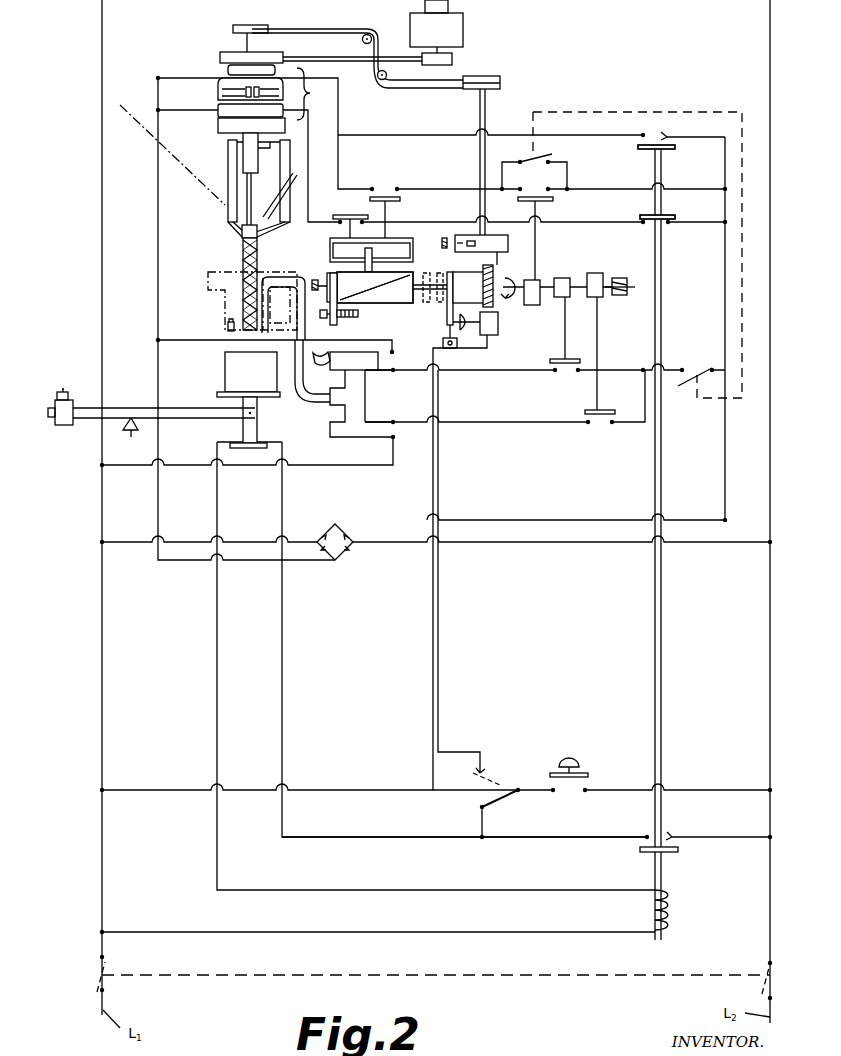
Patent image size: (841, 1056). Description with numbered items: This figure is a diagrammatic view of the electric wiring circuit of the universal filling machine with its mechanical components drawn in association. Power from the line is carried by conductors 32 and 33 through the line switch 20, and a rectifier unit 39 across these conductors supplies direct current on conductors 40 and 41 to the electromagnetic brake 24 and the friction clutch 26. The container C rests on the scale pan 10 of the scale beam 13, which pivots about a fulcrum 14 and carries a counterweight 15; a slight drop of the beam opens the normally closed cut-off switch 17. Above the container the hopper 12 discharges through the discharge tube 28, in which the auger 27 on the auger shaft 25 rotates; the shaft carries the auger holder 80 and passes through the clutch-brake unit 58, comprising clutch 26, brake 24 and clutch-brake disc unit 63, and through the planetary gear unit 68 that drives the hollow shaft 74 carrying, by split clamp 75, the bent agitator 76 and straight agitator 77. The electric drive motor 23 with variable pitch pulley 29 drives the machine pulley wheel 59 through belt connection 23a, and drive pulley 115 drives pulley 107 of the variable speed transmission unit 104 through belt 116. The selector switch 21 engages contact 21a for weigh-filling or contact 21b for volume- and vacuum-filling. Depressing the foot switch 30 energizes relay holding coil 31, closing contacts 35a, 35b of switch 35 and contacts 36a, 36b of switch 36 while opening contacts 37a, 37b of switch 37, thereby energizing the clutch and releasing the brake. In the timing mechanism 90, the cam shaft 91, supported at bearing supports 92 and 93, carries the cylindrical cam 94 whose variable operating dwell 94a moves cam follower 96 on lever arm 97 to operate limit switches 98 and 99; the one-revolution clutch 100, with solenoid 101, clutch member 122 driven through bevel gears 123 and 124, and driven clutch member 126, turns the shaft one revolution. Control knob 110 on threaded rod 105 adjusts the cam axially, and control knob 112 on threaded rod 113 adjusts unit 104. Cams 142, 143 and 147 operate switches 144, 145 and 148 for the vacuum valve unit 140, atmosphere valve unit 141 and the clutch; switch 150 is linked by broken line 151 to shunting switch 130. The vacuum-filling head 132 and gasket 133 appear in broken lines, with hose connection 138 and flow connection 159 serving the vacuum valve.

The scale pan 10 is at (217, 394).
The hopper 12 is at (172, 172).
The scale beam 13 is at (208, 418).
The fulcrum 14 is at (129, 438).
The counterweight 15 is at (55, 404).
The cut-off switch 17 is at (268, 443).
The line switch 20 is at (104, 985).
The selector switch 21 is at (506, 800).
The contact 21a is at (480, 808).
The contact 21b is at (484, 771).
The electric drive motor 23 is at (463, 31).
The belt connection 23a is at (388, 57).
The electromagnetic brake 24 is at (218, 112).
The auger shaft 25 is at (246, 45).
The friction clutch 26 is at (232, 78).
The auger 27 is at (245, 264).
The discharge tube 28 is at (243, 284).
The variable pitch pulley 29 is at (452, 60).
The foot switch 30 is at (579, 760).
The relay holding coil 31 is at (664, 919).
The conductor 32 is at (770, 690).
The conductor 33 is at (105, 684).
The normally open switch 35 is at (623, 889).
The contact 35a is at (675, 838).
The contact 35b is at (678, 850).
The normally open switch 36 is at (622, 175).
The contact 36a is at (669, 137).
The contact 36b is at (676, 148).
The normally closed switch 37 is at (667, 205).
The contact 37a is at (670, 222).
The contact 37b is at (645, 215).
The rectifier unit 39 is at (340, 528).
The conductor 40 is at (725, 458).
The conductor 41 is at (158, 258).
The clutch-brake unit 58 is at (311, 103).
The machine pulley wheel 59 is at (274, 56).
The clutch-brake disc unit 63 is at (218, 93).
The planetary gear unit 68 is at (218, 128).
The hollow shaft 74 is at (255, 168).
The split clamp 75 is at (232, 148).
The bent agitator 76 is at (282, 204).
The straight agitator 77 is at (228, 190).
The auger holder 80 is at (258, 232).
The timing mechanism 90 is at (380, 330).
The cam shaft 91 is at (623, 295).
The bearing support 92 is at (315, 280).
The bearing support 93 is at (622, 278).
The cylindrical cam 94 is at (407, 277).
The variable operating dwell 94a is at (372, 299).
The cam follower 96 is at (372, 256).
The lever arm 97 is at (405, 241).
The limit switch 98 is at (347, 215).
The limit switch 99 is at (387, 197).
The one-revolution clutch 100 is at (454, 265).
The solenoid 101 is at (498, 330).
The variable speed transmission unit 104 is at (503, 240).
The threaded rod 105 is at (346, 318).
The pulley 107 is at (500, 80).
The control knob 110 is at (323, 318).
The control knob 112 is at (442, 238).
The threaded rod 113 is at (457, 240).
The drive pulley 115 is at (250, 25).
The belt 116 is at (318, 29).
The clutch member 122 is at (470, 280).
The bevel gear 123 is at (495, 272).
The bevel gear 124 is at (492, 298).
The driven clutch member 126 is at (448, 302).
The shunting switch 130 is at (518, 161).
The vacuum-filling head 132 is at (208, 284).
The gasket 133 is at (210, 330).
The hose connection 138 is at (316, 404).
The vacuum valve unit 140 is at (354, 361).
The atmosphere valve unit 141 is at (348, 437).
The cam 142 is at (562, 278).
The cam 143 is at (597, 273).
The switch 144 is at (564, 364).
The switch 145 is at (598, 415).
The cam 147 is at (535, 305).
The normally open switch 148 is at (553, 200).
The normally open switch 150 is at (688, 372).
The broken line 151 is at (665, 110).
The flow connection 159 is at (319, 369).
The container C is at (225, 364).